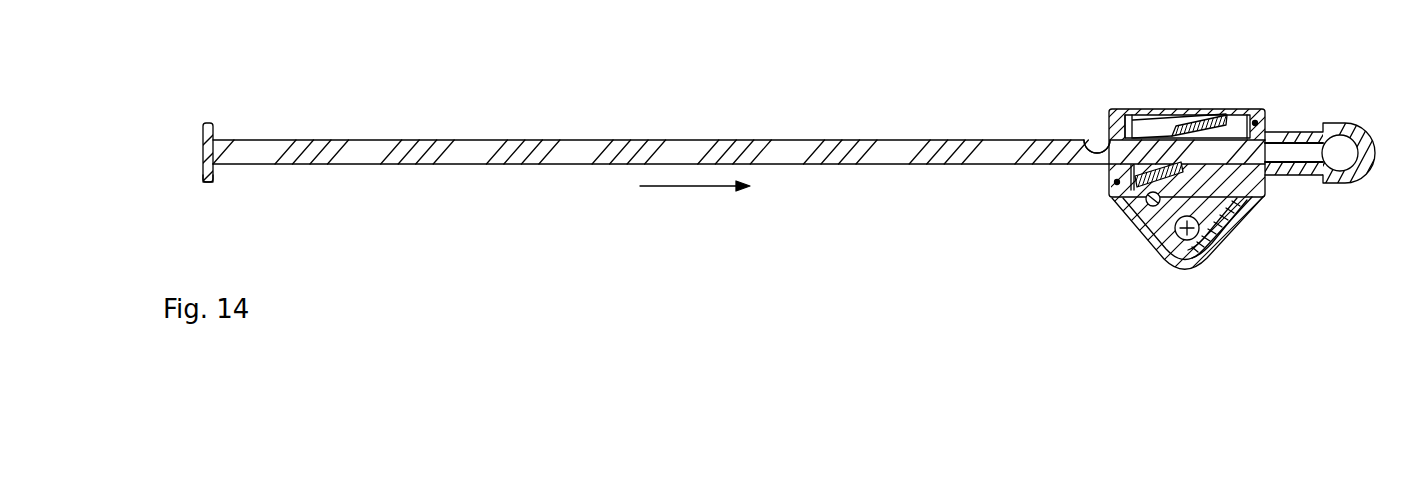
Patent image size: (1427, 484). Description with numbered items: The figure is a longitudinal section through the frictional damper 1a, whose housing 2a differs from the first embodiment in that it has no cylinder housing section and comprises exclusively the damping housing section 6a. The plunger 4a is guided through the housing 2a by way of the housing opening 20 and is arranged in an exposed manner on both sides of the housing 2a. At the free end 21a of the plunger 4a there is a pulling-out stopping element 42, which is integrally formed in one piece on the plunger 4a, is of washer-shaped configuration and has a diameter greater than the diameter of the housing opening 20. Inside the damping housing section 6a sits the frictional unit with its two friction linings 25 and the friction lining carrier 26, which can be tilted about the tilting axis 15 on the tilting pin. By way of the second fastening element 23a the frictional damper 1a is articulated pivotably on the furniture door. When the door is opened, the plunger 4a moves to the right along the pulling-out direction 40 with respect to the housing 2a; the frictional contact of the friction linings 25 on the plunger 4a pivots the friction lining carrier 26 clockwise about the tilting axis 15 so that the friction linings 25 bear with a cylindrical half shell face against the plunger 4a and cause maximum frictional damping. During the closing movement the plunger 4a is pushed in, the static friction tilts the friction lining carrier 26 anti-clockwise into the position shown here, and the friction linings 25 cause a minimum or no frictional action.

The frictional damper 1a is at (797, 110).
The housing 2a is at (1184, 208).
The plunger 4a is at (588, 142).
The damping housing section 6a is at (1123, 202).
The tilting axis 15 is at (1201, 237).
The housing opening 20 is at (1087, 139).
The free end 21a is at (201, 132).
The second fastening element 23a is at (1338, 122).
The friction linings 25 is at (1200, 121).
The friction lining carrier 26 is at (1226, 204).
The pulling-out direction 40 is at (695, 190).
The pulling-out stopping element 42 is at (208, 182).